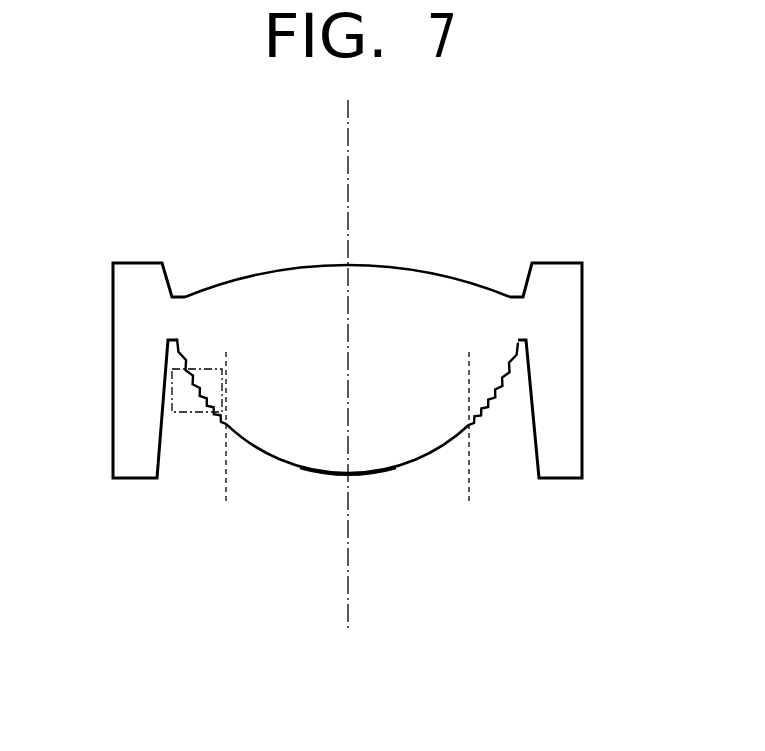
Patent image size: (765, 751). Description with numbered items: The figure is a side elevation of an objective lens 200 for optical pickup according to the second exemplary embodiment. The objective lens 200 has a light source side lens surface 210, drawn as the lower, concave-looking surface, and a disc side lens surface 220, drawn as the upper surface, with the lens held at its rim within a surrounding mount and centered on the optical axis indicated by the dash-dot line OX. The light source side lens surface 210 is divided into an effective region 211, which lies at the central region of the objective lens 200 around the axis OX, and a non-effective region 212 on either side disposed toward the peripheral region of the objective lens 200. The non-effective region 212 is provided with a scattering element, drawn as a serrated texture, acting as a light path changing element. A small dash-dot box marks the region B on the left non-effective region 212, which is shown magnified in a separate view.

The objective lens 200 is at (286, 105).
The light source side lens surface 210 is at (408, 468).
The effective region 211 is at (372, 475).
The non-effective region 212 is at (175, 356).
The disc side lens surface 220 is at (486, 289).
The region B is at (185, 413).
The optical axis OX is at (348, 107).